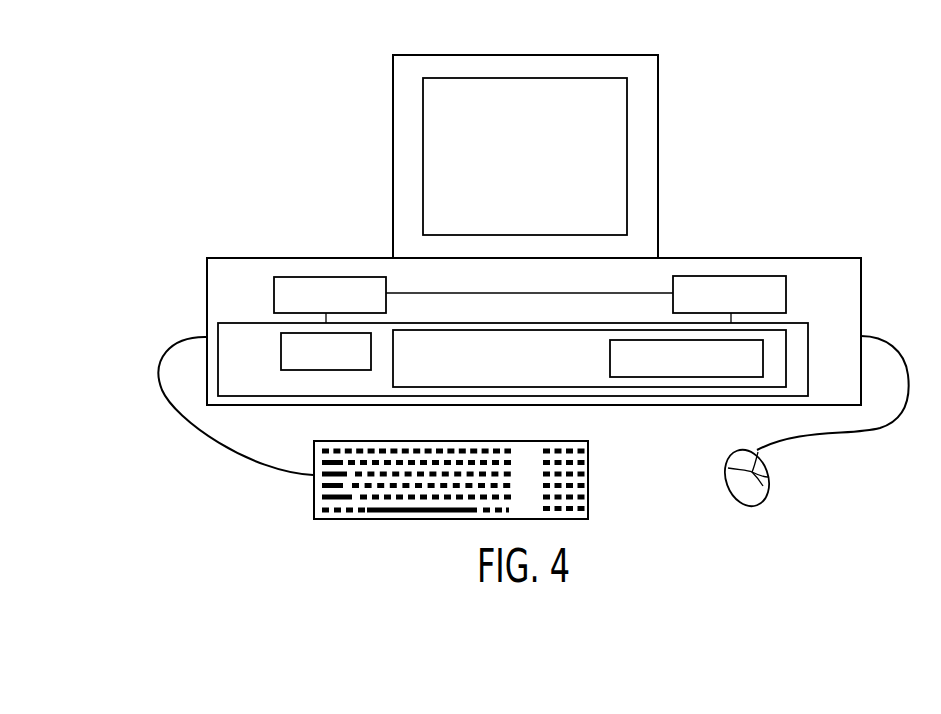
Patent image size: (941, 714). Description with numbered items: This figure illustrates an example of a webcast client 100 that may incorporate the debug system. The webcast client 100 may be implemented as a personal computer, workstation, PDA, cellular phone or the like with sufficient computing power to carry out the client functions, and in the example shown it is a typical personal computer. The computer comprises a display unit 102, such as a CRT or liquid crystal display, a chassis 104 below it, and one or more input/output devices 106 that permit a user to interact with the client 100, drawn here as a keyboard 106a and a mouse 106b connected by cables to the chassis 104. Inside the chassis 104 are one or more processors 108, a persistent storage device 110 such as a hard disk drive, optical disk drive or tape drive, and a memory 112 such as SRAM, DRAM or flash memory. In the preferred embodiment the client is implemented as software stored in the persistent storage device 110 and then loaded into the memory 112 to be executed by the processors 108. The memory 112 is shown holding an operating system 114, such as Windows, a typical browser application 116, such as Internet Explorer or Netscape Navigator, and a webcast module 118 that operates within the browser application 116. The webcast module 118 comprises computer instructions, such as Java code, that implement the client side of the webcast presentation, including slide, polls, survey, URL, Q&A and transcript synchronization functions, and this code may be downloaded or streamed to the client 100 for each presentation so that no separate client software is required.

The webcast client 100 is at (658, 122).
The display unit 102 is at (541, 164).
The chassis 104 is at (849, 288).
The input/output devices 106 is at (182, 423).
The keyboard 106a is at (588, 473).
The mouse 106b is at (722, 488).
The processor 108 is at (344, 306).
The persistent storage device 110 is at (745, 306).
The memory 112 is at (261, 356).
The operating system 114 is at (340, 366).
The browser application 116 is at (485, 366).
The webcast module 118 is at (712, 370).